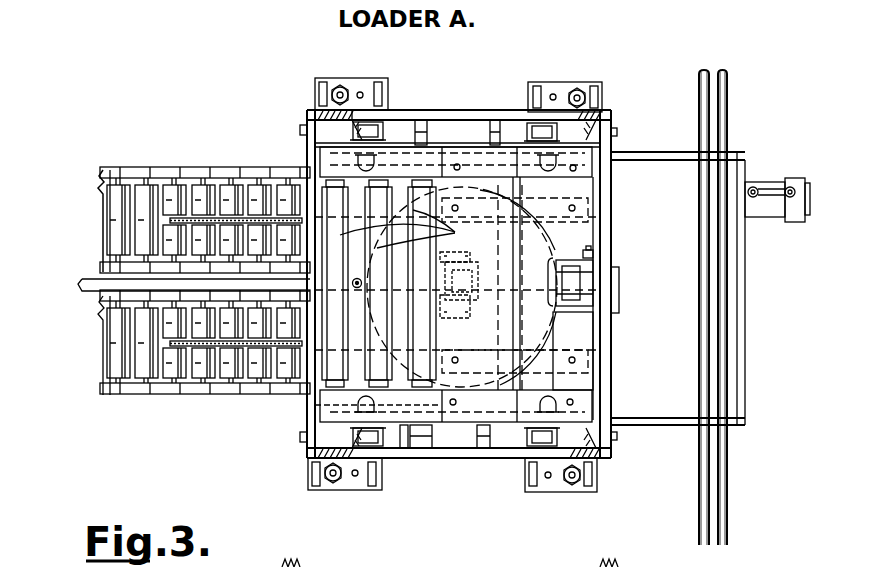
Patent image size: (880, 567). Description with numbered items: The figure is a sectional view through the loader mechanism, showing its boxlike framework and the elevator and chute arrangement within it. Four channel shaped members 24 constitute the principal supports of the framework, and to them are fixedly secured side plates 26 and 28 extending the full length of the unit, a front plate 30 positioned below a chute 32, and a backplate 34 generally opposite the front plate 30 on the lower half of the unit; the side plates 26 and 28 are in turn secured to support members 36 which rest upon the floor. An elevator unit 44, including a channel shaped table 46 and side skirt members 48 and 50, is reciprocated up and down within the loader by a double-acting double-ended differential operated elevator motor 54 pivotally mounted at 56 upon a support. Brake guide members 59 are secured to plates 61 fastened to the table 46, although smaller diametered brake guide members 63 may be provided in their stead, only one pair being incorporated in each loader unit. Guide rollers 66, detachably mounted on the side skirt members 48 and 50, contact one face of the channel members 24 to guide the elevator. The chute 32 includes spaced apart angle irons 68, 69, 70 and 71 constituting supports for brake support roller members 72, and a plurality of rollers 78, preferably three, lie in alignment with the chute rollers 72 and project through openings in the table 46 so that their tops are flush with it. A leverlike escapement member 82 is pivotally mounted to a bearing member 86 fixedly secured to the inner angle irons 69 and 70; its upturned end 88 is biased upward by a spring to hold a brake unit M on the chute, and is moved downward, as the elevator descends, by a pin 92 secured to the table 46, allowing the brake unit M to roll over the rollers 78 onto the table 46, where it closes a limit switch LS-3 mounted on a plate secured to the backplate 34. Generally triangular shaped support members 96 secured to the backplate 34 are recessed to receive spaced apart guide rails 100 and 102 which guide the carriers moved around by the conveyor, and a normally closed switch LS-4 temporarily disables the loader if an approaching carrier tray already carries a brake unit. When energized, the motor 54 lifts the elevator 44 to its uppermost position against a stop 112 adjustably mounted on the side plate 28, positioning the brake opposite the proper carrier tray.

The channel shaped members 24 is at (313, 115).
The side plate 26 is at (508, 458).
The side plate 28 is at (412, 110).
The front plate 30 is at (305, 428).
The chute 32 is at (132, 402).
The backplate 34 is at (607, 373).
The support members 36 is at (350, 82).
The elevator unit 44 is at (605, 338).
The channel shaped table 46 is at (600, 252).
The skirt member 48 is at (447, 132).
The skirt member 50 is at (404, 442).
The elevator motor 54 is at (477, 268).
The pivot mounting 56 is at (462, 296).
The brake guide members 59 is at (325, 182).
The plates 61 is at (585, 168).
The brake guide members 63 is at (300, 163).
The guide rollers 66 is at (383, 124).
The angle iron 68 is at (93, 180).
The angle iron 69 is at (100, 250).
The angle iron 70 is at (98, 312).
The angle iron 71 is at (88, 392).
The brake support roller members 72 is at (143, 198).
The rollers 78 is at (410, 229).
The escapement member 82 is at (80, 286).
The bearing member 86 is at (198, 388).
The upturned end 88 is at (232, 222).
The pin 92 is at (365, 282).
The support members 96 is at (677, 157).
The guide rail 100 is at (698, 328).
The guide rail 102 is at (723, 337).
The stop 112 is at (483, 120).
The brake unit M is at (545, 243).
The limit switch LS-3 is at (600, 283).
The switch LS-4 is at (760, 210).